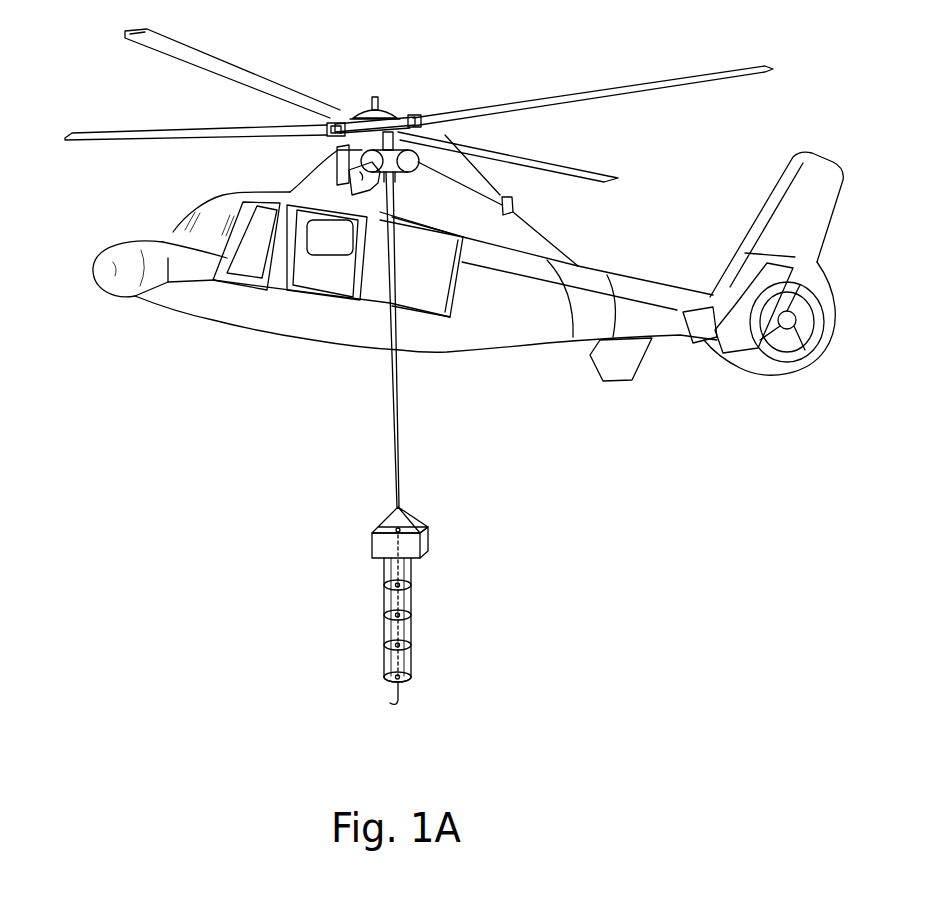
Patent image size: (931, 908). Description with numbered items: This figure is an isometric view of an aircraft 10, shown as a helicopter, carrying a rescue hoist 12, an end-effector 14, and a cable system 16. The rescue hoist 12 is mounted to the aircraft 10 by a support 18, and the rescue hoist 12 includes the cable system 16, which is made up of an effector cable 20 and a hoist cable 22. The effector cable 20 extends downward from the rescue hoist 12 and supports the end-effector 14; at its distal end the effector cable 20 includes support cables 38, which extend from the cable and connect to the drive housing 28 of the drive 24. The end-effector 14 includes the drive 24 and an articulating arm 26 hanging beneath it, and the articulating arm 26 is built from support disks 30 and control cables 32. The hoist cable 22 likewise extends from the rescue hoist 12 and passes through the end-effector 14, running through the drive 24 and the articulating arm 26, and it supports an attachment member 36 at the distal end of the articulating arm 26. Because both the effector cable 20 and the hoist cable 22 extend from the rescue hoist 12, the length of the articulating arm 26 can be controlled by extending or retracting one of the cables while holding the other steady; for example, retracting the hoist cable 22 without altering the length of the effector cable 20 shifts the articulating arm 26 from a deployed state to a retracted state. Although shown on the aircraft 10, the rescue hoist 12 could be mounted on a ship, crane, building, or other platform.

The aircraft 10 is at (260, 193).
The rescue hoist 12 is at (403, 147).
The end-effector 14 is at (445, 542).
The cable system 16 is at (368, 455).
The support 18 is at (362, 172).
The effector cable 20 is at (390, 397).
The hoist cable 22 is at (400, 375).
The drive 24 is at (372, 550).
The articulating arm 26 is at (372, 607).
The drive housing 28 is at (430, 535).
The support disks 30 is at (385, 677).
The control cables 32 is at (412, 608).
The attachment member 36 is at (402, 703).
The support cables 38 is at (416, 518).